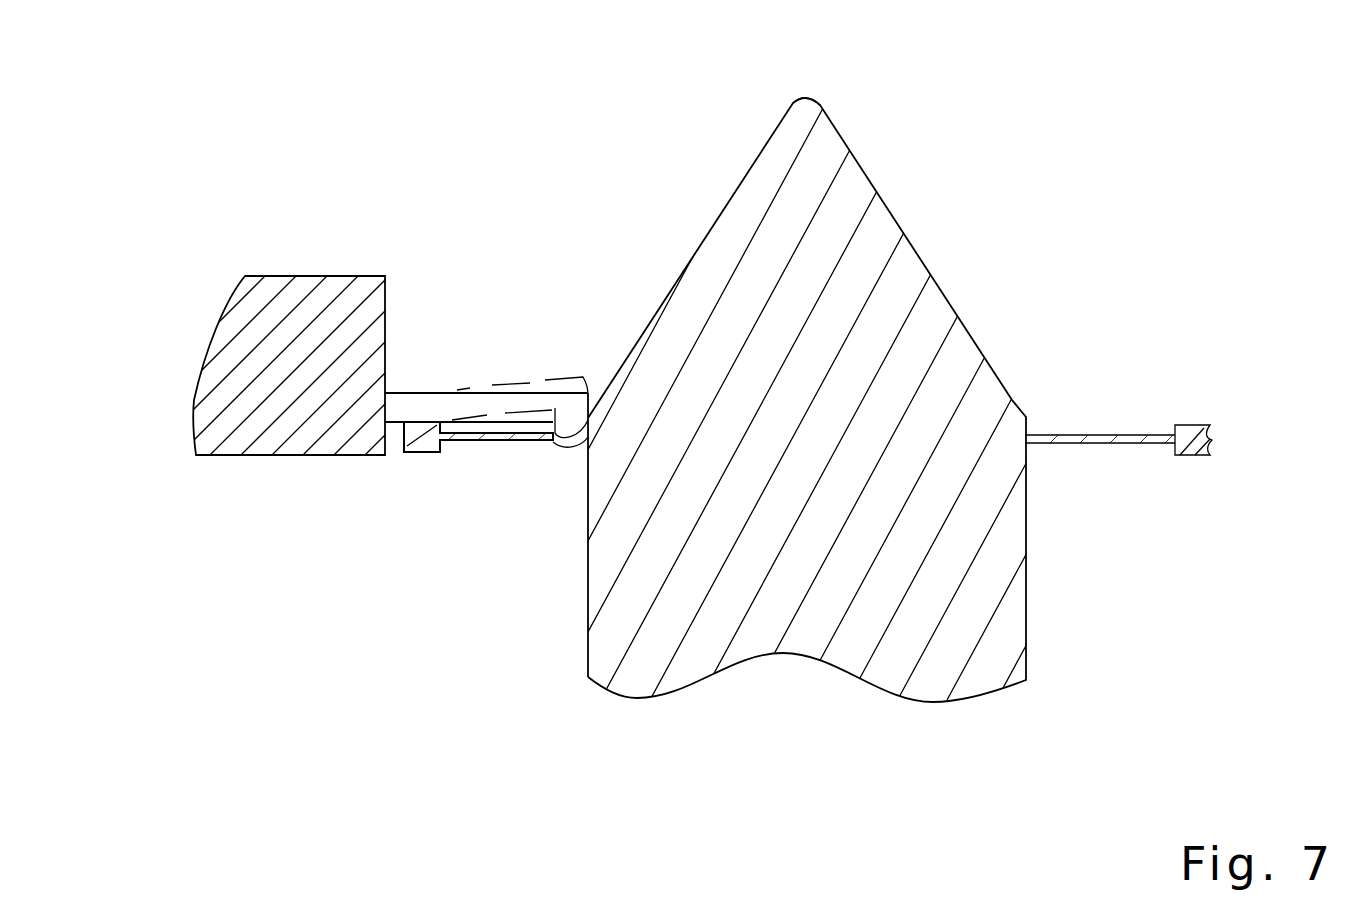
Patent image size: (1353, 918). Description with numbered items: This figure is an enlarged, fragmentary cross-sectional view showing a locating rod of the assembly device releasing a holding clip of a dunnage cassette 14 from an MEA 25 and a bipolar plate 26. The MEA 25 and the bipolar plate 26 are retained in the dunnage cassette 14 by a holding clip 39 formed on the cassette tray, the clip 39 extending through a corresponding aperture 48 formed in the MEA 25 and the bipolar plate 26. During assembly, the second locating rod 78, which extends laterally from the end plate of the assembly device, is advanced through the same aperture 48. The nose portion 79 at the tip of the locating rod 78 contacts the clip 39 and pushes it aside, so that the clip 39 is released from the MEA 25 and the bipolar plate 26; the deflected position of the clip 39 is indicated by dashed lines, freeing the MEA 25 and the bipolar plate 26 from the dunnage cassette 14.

The dunnage cassette 14 is at (228, 338).
The MEA 25 is at (447, 443).
The bipolar plate 26 is at (447, 443).
The holding clip 39 is at (540, 443).
The aperture 48 is at (1173, 436).
The second locating rod 78 is at (885, 485).
The nose portion 79 is at (822, 106).